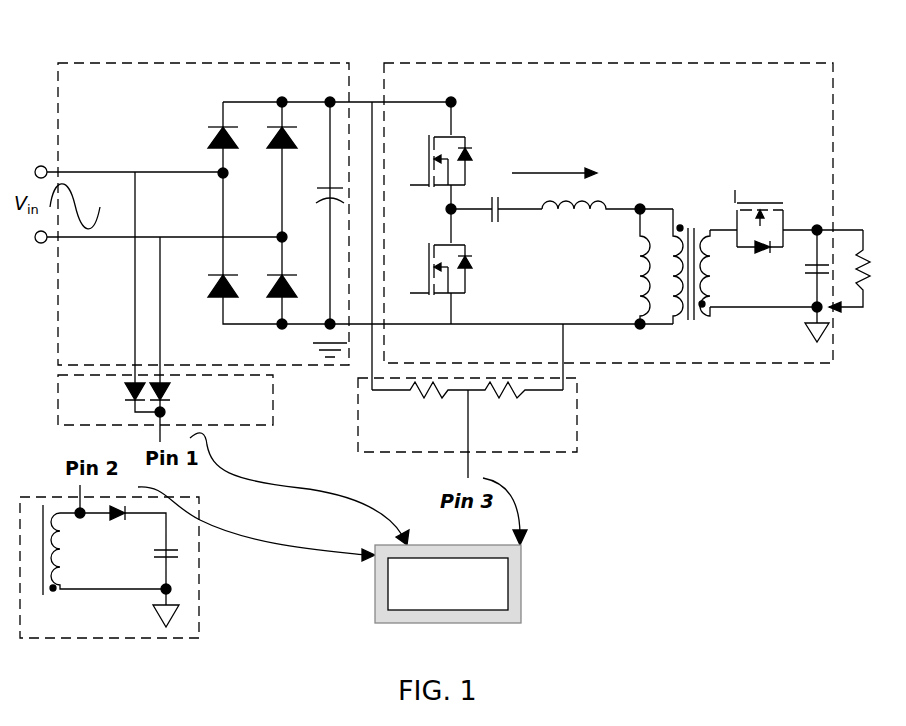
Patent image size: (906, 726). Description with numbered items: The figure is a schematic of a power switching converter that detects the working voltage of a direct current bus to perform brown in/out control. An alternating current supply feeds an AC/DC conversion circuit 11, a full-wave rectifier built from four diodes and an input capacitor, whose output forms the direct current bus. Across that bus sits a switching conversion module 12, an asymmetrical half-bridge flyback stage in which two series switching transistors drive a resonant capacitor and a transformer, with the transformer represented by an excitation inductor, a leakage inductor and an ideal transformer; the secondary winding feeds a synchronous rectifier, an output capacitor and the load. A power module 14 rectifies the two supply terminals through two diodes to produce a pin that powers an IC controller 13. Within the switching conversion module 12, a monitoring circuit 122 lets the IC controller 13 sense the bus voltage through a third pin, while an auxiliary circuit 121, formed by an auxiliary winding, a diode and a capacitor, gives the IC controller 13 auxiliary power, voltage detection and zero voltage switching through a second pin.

The AC/DC conversion circuit 11 is at (155, 62).
The switching conversion module 12 is at (598, 62).
The IC controller 13 is at (522, 583).
The power module 14 is at (98, 430).
The auxiliary circuit 121 is at (250, 593).
The monitoring circuit 122 is at (631, 408).